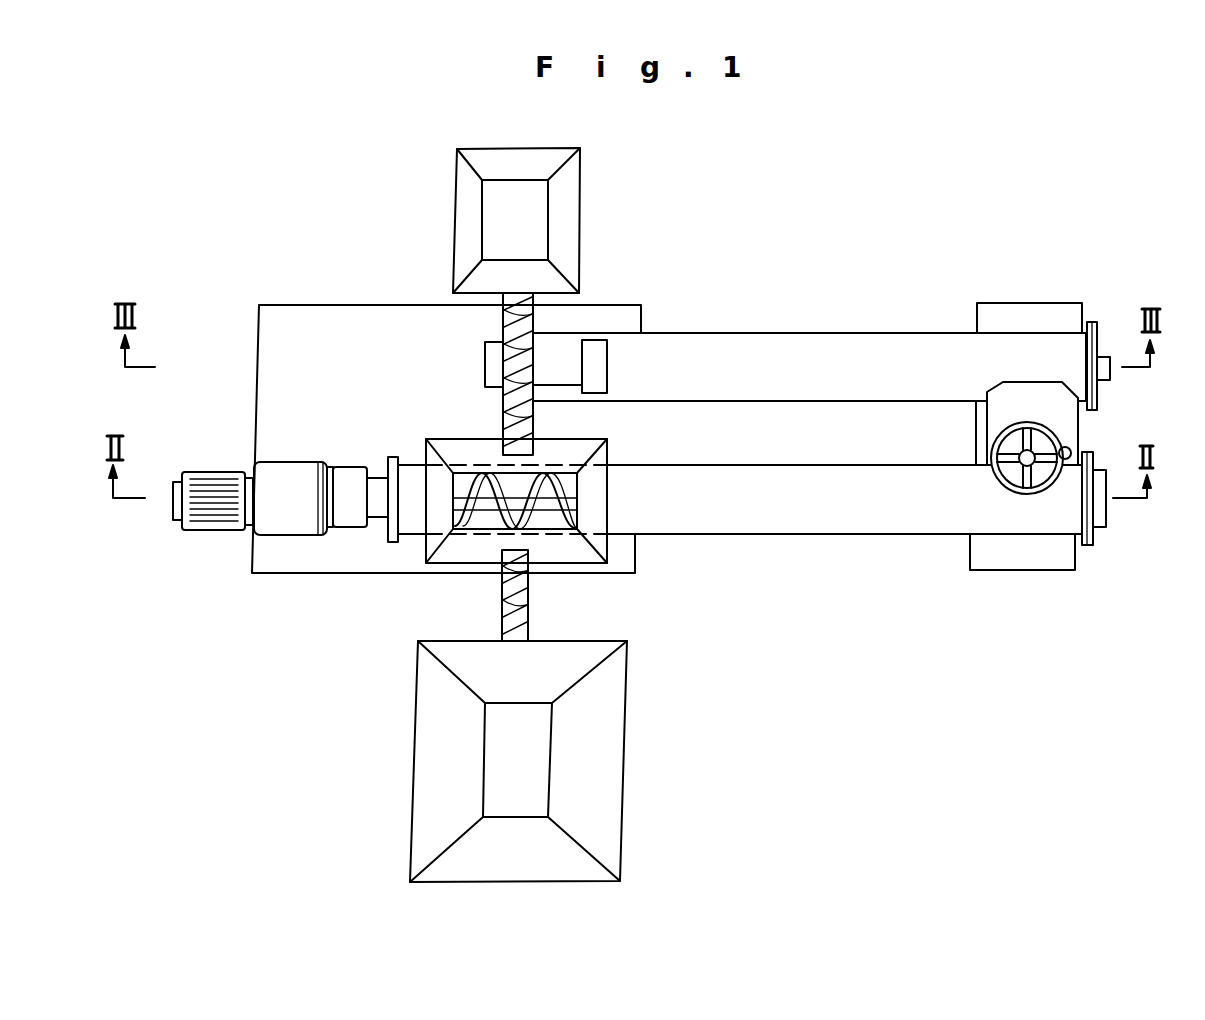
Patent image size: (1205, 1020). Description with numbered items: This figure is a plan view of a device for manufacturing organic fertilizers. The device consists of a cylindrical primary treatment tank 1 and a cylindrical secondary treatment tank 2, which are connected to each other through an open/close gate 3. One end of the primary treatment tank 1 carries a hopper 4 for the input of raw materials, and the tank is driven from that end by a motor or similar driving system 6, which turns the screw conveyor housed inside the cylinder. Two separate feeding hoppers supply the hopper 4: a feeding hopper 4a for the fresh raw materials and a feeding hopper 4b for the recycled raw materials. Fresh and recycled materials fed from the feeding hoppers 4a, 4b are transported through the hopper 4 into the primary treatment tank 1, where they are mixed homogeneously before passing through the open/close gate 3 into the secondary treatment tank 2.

The primary treatment tank 1 is at (830, 535).
The secondary treatment tank 2 is at (827, 333).
The open/close gate 3 is at (1069, 449).
The hopper 4 is at (572, 553).
The feeding hopper of the fresh raw materials 4a is at (605, 788).
The feeding hopper of the recycled raw materials 4b is at (572, 198).
The driving system 6 is at (207, 530).